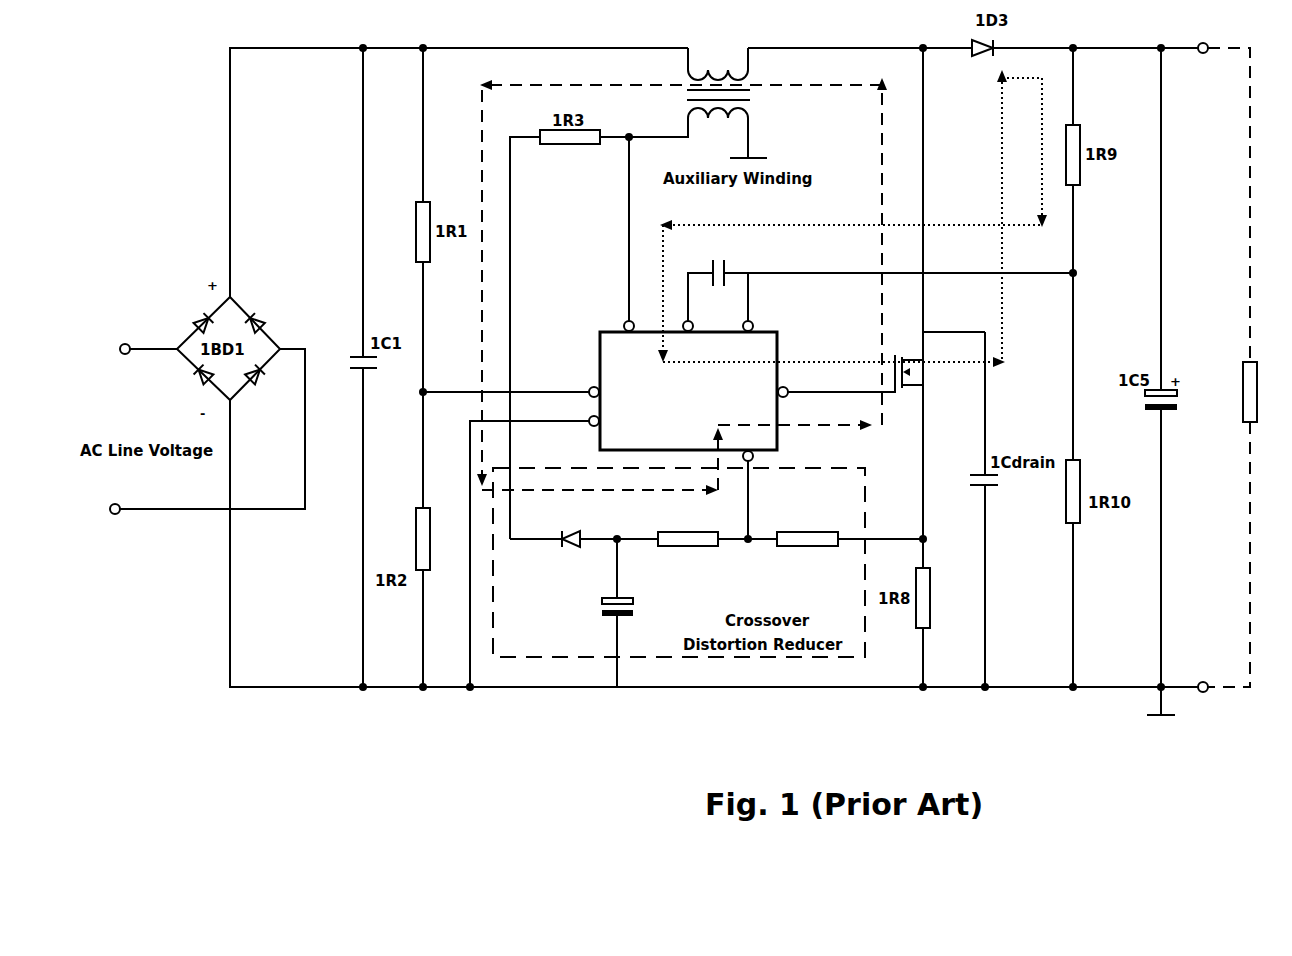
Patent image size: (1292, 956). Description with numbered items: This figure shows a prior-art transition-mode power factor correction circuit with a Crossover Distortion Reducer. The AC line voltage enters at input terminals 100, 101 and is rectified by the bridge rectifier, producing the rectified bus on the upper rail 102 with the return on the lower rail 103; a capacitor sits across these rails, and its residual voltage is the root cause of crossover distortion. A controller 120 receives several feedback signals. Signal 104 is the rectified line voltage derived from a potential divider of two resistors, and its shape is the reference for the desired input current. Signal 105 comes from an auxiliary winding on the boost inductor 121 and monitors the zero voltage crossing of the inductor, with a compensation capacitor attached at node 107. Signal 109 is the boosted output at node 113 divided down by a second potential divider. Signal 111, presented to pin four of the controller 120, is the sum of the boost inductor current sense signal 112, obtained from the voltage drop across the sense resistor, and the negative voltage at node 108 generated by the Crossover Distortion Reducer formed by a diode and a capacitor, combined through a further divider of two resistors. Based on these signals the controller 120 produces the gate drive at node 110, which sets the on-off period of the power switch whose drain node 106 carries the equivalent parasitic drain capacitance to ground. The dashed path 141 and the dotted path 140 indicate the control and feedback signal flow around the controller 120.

The AC line input terminal 100 is at (142, 335).
The AC line input terminal 101 is at (206, 431).
The rectified DC bus node 102 is at (714, 162).
The ground return node 103 is at (719, 557).
The rectified line voltage signal 104 is at (504, 384).
The auxiliary winding signal 105 is at (611, 227).
The drain node 106 is at (925, 356).
The compensation node 107 is at (718, 278).
The Crossover Distortion Reducer node 108 is at (716, 599).
The divided down boosted output signal 109 is at (900, 264).
The output signal node 110 is at (886, 372).
The control signal node 111 is at (748, 513).
The boost inductor current sense signal 112 is at (944, 541).
The boosted output node 113 is at (1163, 358).
The controller 120 is at (688, 391).
The boost inductor 121 is at (719, 51).
The feedback signal path 140 is at (852, 218).
The control signal path 141 is at (682, 286).